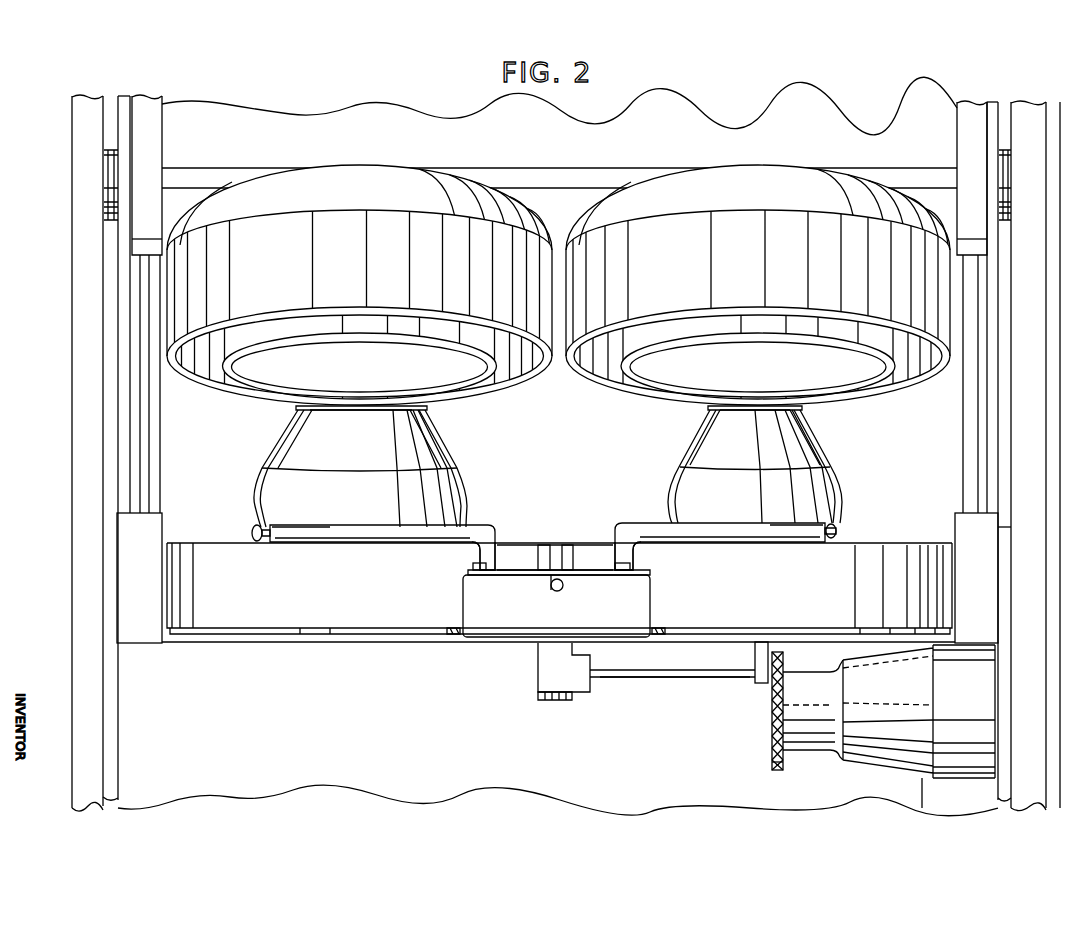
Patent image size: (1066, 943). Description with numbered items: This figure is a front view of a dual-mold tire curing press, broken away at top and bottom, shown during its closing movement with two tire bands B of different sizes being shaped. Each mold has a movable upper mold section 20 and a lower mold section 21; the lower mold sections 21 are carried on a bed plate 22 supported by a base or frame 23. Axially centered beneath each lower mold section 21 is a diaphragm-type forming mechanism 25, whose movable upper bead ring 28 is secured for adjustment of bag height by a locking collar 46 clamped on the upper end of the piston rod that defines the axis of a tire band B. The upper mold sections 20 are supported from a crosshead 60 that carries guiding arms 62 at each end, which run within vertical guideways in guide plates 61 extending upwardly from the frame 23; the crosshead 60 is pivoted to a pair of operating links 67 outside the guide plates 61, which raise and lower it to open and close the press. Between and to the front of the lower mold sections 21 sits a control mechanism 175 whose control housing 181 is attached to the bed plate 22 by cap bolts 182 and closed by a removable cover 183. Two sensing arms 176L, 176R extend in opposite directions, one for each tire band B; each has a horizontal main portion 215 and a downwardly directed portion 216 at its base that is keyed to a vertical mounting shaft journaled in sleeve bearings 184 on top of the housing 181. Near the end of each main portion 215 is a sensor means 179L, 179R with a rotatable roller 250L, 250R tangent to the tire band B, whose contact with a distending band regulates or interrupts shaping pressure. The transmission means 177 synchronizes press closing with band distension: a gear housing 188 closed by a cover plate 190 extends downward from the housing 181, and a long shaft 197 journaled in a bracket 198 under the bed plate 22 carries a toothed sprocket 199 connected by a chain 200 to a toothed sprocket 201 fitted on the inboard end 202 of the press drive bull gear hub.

The crosshead 60 is at (306, 117).
The guide plate 61 is at (125, 258).
The guiding arm 62 is at (148, 100).
The operating link 67 is at (82, 356).
The upper mold section 20 is at (490, 370).
The tire band B is at (466, 485).
The forming mechanism 25 is at (292, 404).
The locking collar 46 is at (360, 410).
The upper bead ring 28 is at (428, 408).
The main portion 215 is at (337, 524).
The downwardly directed portion 216 is at (470, 522).
The sensor means 179L is at (286, 526).
The sensor means 179R is at (805, 526).
The sensing arm 176L is at (373, 542).
The sensing arm 176R is at (727, 544).
The roller 250L is at (251, 527).
The roller 250R is at (840, 528).
The sleeve bearing 184 is at (478, 565).
The lower mold section 21 is at (512, 547).
The control mechanism 175 is at (587, 564).
The bed plate 22 is at (250, 628).
The control housing 181 is at (466, 598).
The cover 183 is at (514, 571).
The cap bolt 182 is at (451, 627).
The base 23 is at (941, 800).
The gear housing 188 is at (541, 655).
The cover plate 190 is at (548, 700).
The long shaft 197 is at (640, 678).
The transmission means 177 is at (702, 682).
The toothed sprocket 199 is at (784, 652).
The bracket 198 is at (763, 688).
The toothed sprocket 201 is at (786, 768).
The chain 200 is at (789, 703).
The inboard end of hub 202 is at (845, 711).